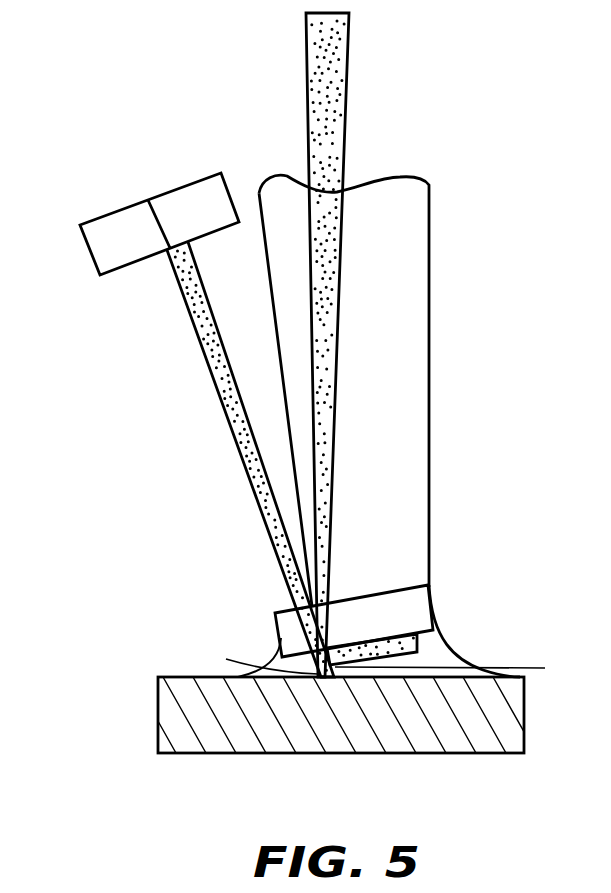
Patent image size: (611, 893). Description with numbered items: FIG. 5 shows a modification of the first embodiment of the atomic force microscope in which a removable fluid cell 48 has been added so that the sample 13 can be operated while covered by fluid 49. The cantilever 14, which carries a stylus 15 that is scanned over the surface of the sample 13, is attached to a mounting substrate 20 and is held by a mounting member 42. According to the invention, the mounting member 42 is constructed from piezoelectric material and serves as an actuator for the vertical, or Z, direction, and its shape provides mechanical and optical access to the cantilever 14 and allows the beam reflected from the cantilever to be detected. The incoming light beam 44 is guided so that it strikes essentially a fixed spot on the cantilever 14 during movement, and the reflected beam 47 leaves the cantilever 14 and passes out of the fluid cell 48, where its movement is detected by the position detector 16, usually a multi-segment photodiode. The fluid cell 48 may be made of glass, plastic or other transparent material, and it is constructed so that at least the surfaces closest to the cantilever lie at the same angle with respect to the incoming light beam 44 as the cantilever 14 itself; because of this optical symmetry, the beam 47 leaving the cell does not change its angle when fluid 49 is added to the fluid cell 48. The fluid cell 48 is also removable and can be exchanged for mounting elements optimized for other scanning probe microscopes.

The sample 13 is at (158, 711).
The cantilever 14 is at (455, 638).
The stylus 15 is at (256, 650).
The position detector 16 is at (148, 200).
The mounting substrate 20 is at (418, 640).
The mounting member 42 is at (429, 320).
The incoming light beam 44 is at (349, 82).
The reflected beam 47 is at (222, 415).
The fluid cell 48 is at (433, 600).
The fluid 49 is at (272, 652).